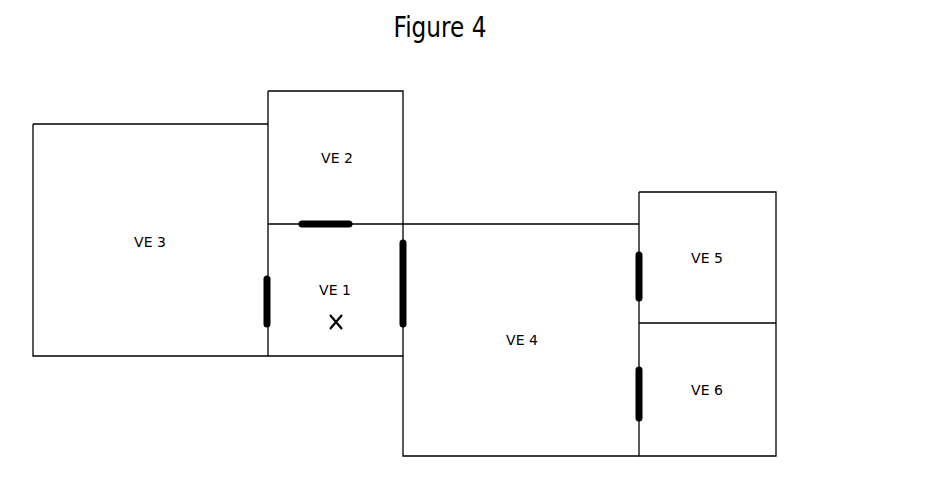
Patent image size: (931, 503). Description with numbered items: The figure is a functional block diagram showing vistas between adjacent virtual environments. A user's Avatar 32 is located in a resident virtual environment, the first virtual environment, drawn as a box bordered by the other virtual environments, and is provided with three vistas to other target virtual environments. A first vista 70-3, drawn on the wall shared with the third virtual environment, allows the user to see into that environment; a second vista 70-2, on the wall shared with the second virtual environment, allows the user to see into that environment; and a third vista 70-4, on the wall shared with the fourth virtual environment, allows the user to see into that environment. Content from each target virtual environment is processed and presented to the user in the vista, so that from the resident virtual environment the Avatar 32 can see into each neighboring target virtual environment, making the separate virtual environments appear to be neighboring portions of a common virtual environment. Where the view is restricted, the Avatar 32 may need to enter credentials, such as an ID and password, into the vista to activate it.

The second vista 70-2 is at (320, 221).
The first vista 70-3 is at (263, 316).
The third vista 70-4 is at (407, 310).
The Avatar 32 is at (334, 342).